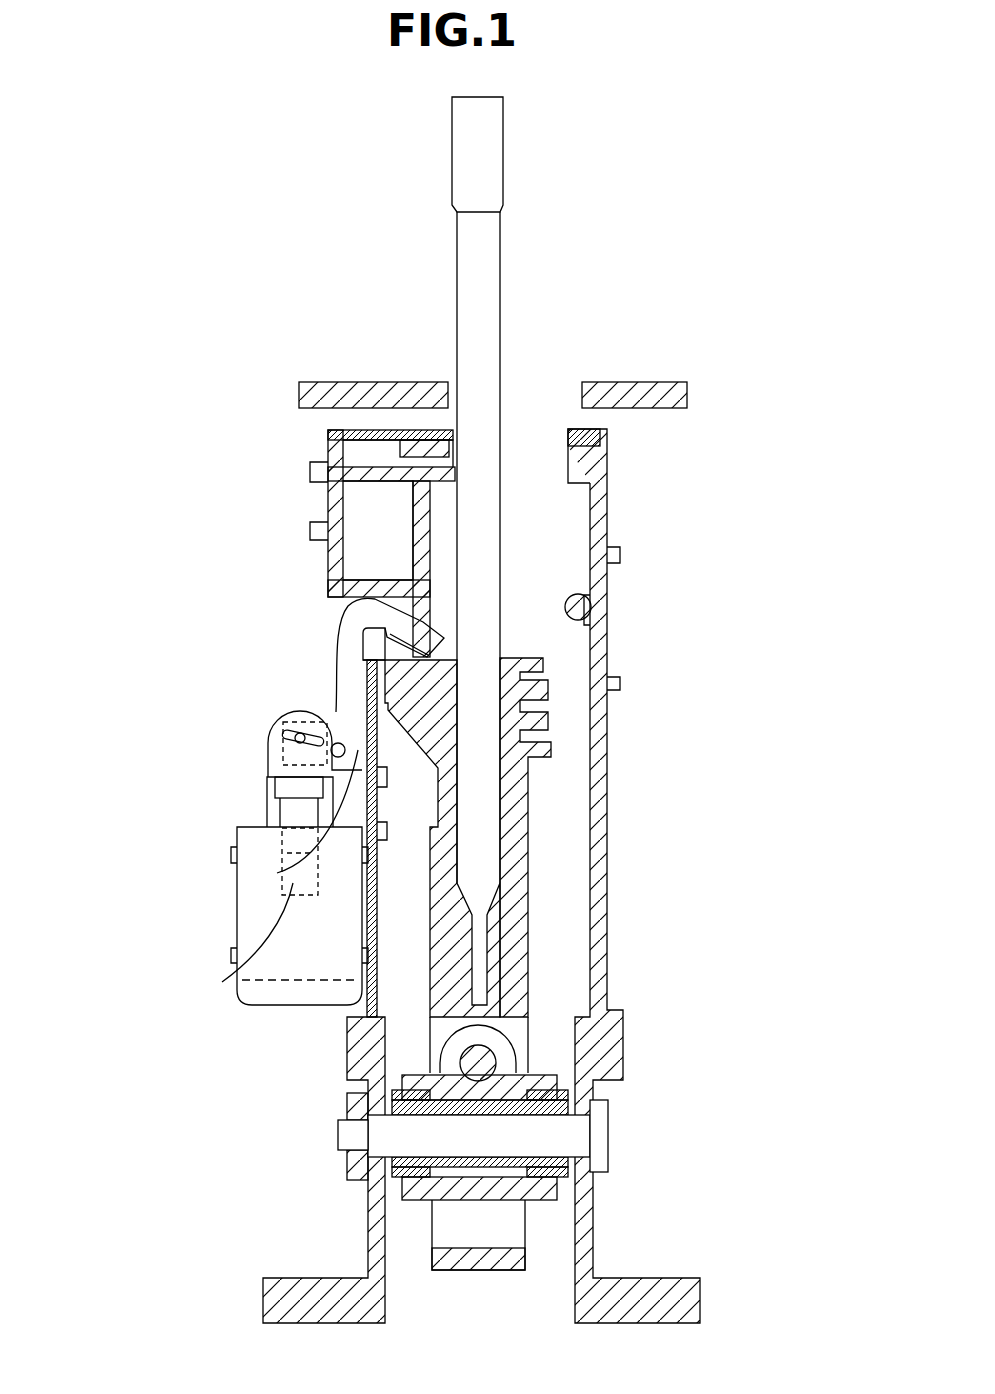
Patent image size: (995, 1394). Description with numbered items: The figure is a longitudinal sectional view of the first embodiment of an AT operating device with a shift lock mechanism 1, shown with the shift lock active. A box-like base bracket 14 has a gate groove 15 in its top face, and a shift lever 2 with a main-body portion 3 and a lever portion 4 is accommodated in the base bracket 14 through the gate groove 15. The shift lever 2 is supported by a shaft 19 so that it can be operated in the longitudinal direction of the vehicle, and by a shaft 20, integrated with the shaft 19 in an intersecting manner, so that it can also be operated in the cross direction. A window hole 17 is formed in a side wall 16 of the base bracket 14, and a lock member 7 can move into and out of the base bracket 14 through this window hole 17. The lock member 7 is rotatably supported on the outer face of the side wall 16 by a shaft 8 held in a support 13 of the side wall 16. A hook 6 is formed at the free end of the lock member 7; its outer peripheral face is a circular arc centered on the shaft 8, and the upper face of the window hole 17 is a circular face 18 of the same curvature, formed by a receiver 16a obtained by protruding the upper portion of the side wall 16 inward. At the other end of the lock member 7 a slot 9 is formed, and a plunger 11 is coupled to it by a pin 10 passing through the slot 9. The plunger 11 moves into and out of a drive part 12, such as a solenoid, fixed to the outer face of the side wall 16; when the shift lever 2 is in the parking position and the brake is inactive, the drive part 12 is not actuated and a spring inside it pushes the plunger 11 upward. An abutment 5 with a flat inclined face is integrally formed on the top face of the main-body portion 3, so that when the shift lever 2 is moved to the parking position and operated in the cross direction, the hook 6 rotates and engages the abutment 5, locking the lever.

The shift lock mechanism 1 is at (178, 382).
The shift lever 2 is at (503, 294).
The main-body portion 3 is at (556, 748).
The lever portion 4 is at (482, 637).
The abutment 5 is at (405, 626).
The hook 6 is at (427, 640).
The lock member 7 is at (355, 641).
The shaft 8 is at (275, 706).
The slot 9 is at (277, 750).
The pin 10 is at (300, 769).
The plunger 11 is at (222, 982).
The drive part 12 is at (252, 892).
The support 13 is at (277, 873).
The base bracket 14 is at (573, 876).
The gate groove 15 is at (568, 440).
The side wall 16 is at (365, 917).
The receiver 16a is at (363, 574).
The window hole 17 is at (374, 647).
The circular face 18 is at (322, 584).
The shaft 19 is at (610, 1141).
The shaft 20 is at (485, 1062).